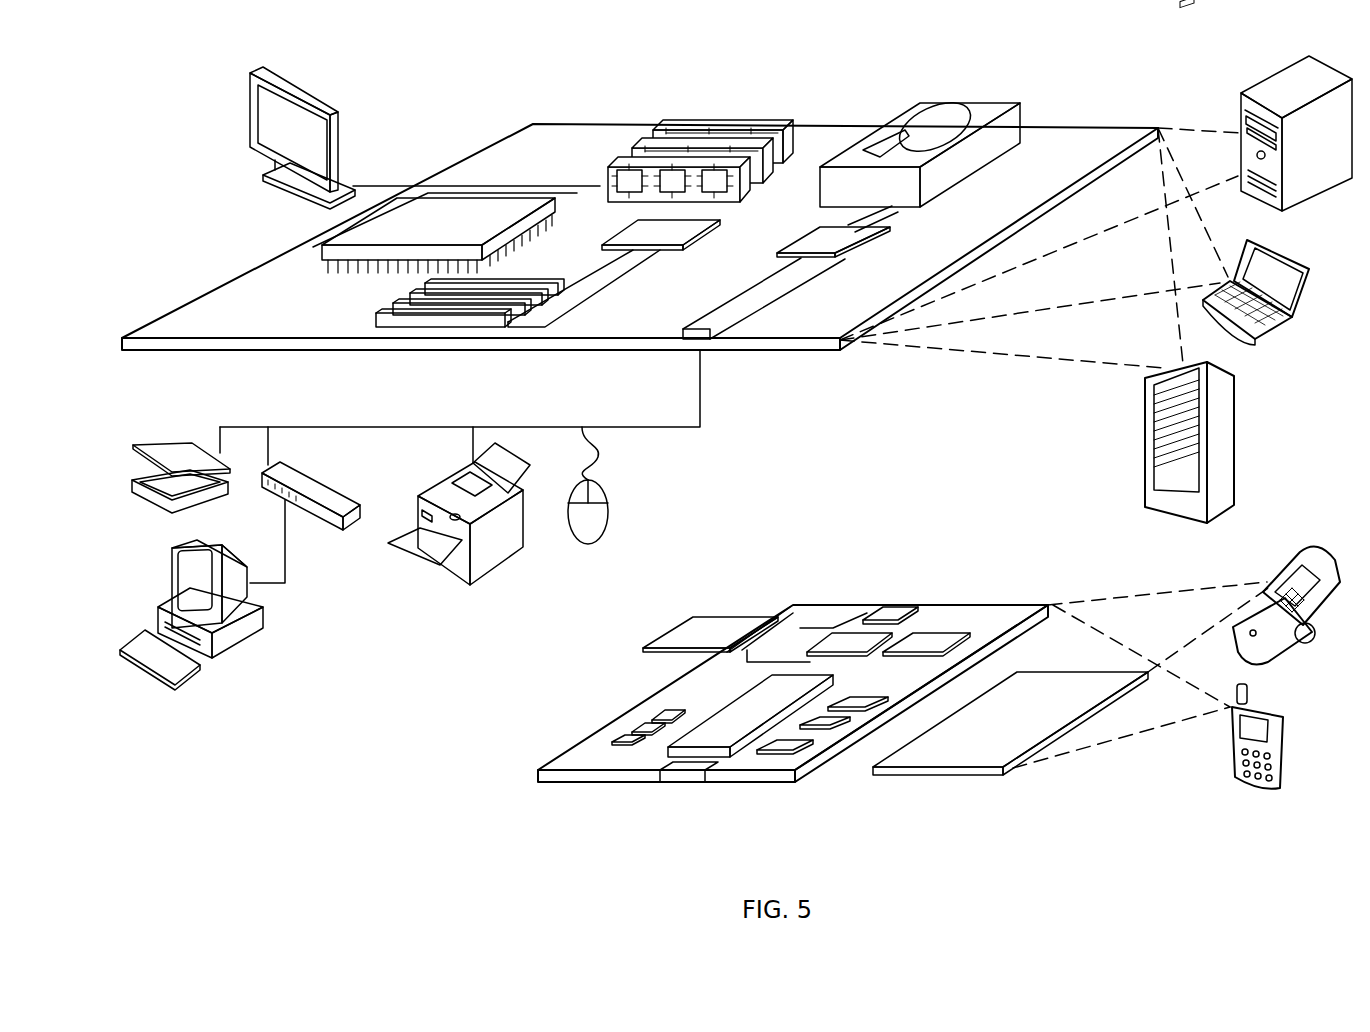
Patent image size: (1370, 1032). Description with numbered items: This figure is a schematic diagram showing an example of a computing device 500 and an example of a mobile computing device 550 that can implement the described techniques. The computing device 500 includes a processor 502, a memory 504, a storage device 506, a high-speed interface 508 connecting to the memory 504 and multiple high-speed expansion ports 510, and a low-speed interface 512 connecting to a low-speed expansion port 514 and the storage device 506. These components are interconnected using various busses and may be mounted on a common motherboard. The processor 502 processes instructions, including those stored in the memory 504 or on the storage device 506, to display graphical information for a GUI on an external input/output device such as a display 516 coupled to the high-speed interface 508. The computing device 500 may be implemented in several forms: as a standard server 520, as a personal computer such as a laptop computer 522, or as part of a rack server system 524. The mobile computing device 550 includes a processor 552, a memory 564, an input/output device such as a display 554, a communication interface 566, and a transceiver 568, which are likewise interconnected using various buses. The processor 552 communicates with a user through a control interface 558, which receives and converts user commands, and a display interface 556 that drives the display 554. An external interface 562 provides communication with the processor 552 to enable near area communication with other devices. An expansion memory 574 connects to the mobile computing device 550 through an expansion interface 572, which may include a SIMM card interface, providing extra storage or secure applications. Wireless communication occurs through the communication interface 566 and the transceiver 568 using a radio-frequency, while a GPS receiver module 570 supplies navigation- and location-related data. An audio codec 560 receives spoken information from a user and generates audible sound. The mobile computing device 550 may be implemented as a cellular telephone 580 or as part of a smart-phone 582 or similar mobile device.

The computing device 500 is at (455, 97).
The processor 502 is at (333, 250).
The memory 504 is at (664, 121).
The storage device 506 is at (920, 106).
The high-speed interface 508 is at (638, 232).
The high-speed expansion ports 510 is at (403, 308).
The low-speed interface 512 is at (818, 232).
The low-speed expansion port 514 is at (713, 338).
The display 516 is at (255, 70).
The standard server 520 is at (1238, 114).
The laptop computer 522 is at (1309, 267).
The rack server system 524 is at (1145, 469).
The mobile computing device 550 is at (510, 784).
The processor 552 is at (723, 735).
The display 554 is at (975, 765).
The display interface 556 is at (793, 747).
The control interface 558 is at (830, 722).
The audio codec 560 is at (855, 702).
The external interface 562 is at (683, 773).
The memory 564 is at (628, 732).
The communication interface 566 is at (847, 640).
The transceiver 568 is at (930, 643).
The GPS receiver module 570 is at (900, 605).
The expansion interface 572 is at (778, 615).
The expansion memory 574 is at (695, 618).
The cellular telephone 580 is at (1292, 562).
The smart-phone 582 is at (1232, 748).